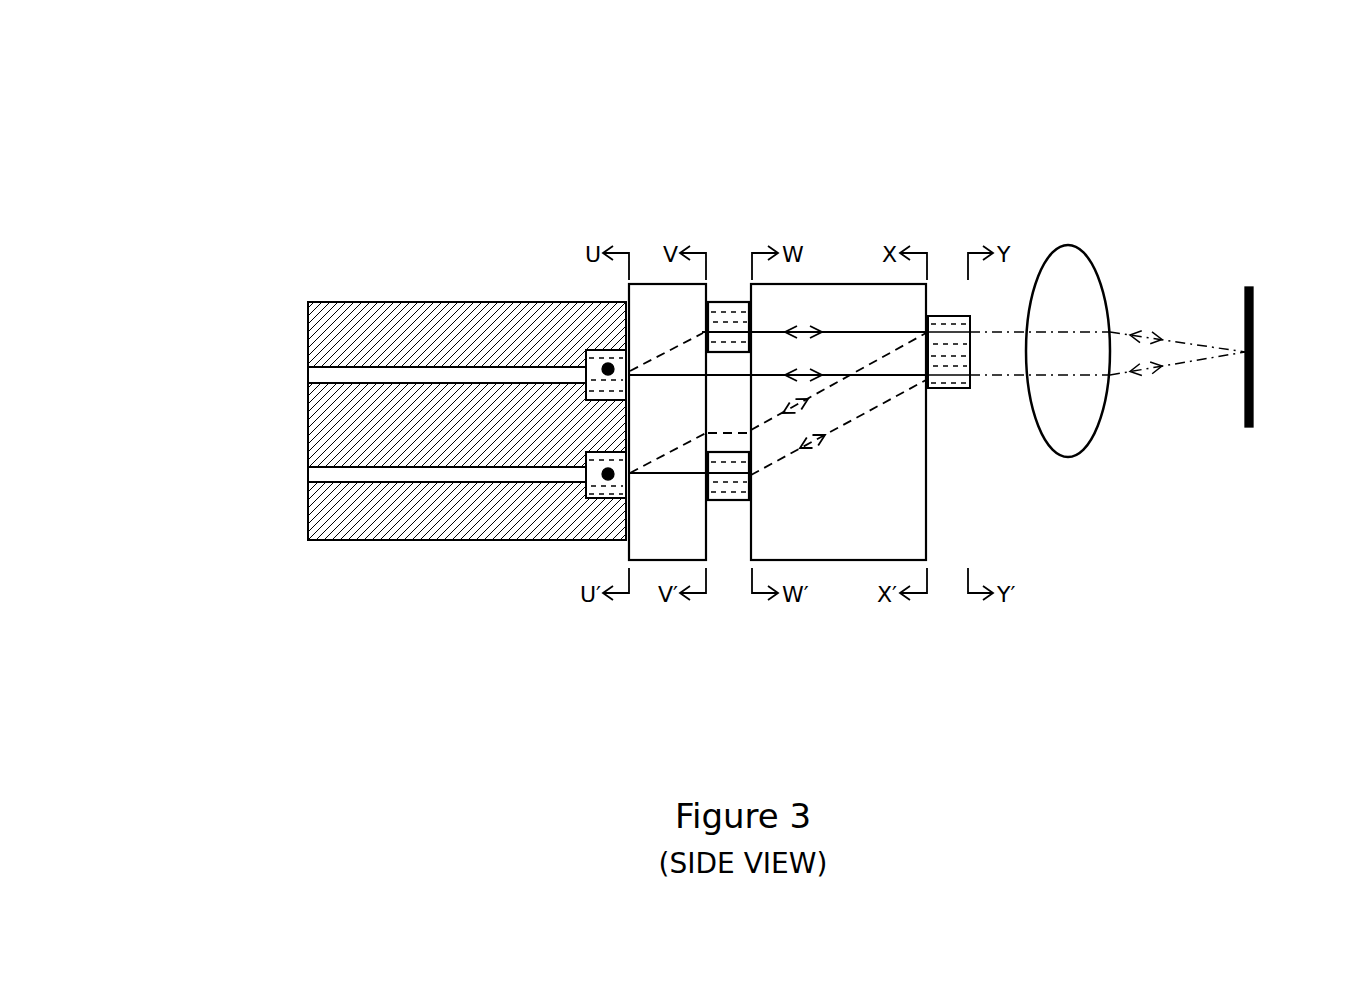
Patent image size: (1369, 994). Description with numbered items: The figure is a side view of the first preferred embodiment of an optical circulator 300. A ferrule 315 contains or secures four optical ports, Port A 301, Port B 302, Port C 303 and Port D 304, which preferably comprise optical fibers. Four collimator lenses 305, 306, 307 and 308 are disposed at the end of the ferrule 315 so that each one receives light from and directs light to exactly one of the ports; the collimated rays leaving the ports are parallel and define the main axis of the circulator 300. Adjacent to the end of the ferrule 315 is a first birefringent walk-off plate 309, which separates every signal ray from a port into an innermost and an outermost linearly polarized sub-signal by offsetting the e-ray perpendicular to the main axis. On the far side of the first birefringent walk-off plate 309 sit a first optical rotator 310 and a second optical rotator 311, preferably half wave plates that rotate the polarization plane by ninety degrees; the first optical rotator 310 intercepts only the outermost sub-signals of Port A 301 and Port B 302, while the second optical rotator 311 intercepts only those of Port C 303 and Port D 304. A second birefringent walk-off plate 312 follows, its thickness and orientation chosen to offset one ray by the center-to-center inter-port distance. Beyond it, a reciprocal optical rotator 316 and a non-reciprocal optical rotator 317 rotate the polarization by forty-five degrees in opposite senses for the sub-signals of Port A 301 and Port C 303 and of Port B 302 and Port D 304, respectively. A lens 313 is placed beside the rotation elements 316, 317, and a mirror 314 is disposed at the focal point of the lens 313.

The circulator 300 is at (478, 79).
The Port A 301 is at (386, 353).
The Port B 302 is at (330, 373).
The Port C 303 is at (383, 493).
The Port D 304 is at (330, 473).
The collimator lens 305 is at (527, 286).
The collimator lens 306 is at (605, 365).
The collimator lens 307 is at (530, 556).
The collimator lens 308 is at (605, 478).
The first birefringent walk-off plate 309 is at (655, 560).
The first optical rotator 310 is at (726, 302).
The second optical rotator 311 is at (735, 500).
The second birefringent walk-off plate 312 is at (842, 284).
The lens 313 is at (1072, 460).
The mirror 314 is at (1257, 278).
The ferrule 315 is at (408, 298).
The reciprocal optical rotator 316 is at (985, 278).
The non-reciprocal optical rotator 317 is at (946, 316).